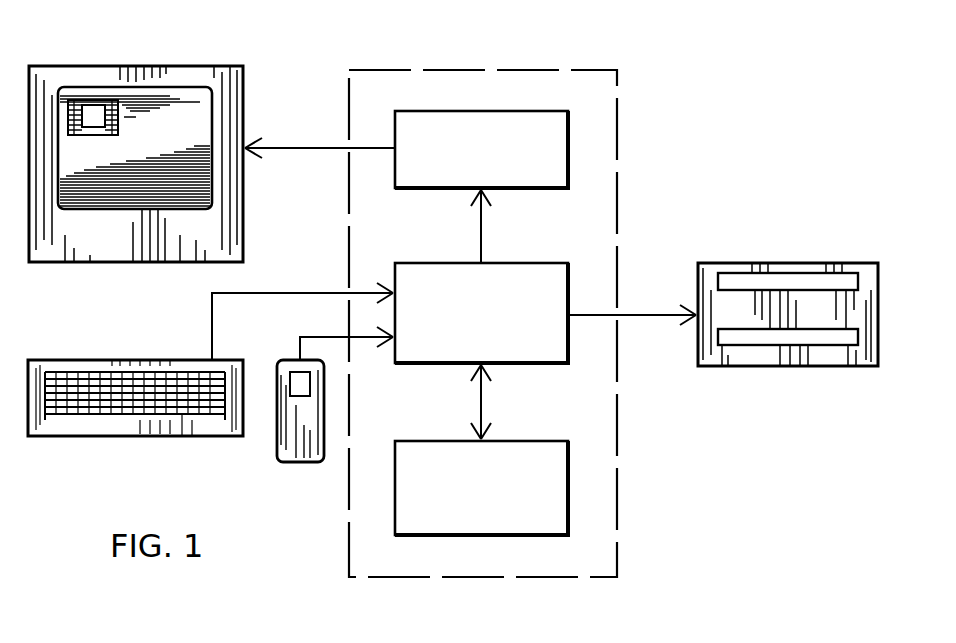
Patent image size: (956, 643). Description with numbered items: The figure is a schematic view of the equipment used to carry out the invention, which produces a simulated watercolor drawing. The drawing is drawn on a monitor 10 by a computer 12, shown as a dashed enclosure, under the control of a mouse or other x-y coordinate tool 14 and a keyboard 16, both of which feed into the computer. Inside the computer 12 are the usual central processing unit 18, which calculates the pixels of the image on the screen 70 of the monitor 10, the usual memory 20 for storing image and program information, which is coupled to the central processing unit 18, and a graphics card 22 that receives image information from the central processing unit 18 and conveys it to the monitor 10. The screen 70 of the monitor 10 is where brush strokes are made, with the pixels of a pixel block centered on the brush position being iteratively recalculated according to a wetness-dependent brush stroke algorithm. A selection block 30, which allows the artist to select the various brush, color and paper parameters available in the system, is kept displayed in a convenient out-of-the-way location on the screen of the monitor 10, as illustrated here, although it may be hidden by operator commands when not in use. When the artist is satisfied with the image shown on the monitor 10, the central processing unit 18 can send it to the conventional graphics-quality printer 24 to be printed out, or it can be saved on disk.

The monitor 10 is at (176, 58).
The computer 12 is at (412, 58).
The mouse or other x-y coordinate tool 14 is at (262, 450).
The keyboard 16 is at (95, 447).
The central processing unit 18 is at (498, 278).
The memory 20 is at (540, 520).
The graphics card 22 is at (553, 125).
The graphics-quality printer 24 is at (748, 254).
The selection block 30 is at (97, 110).
The screen 70 is at (108, 215).